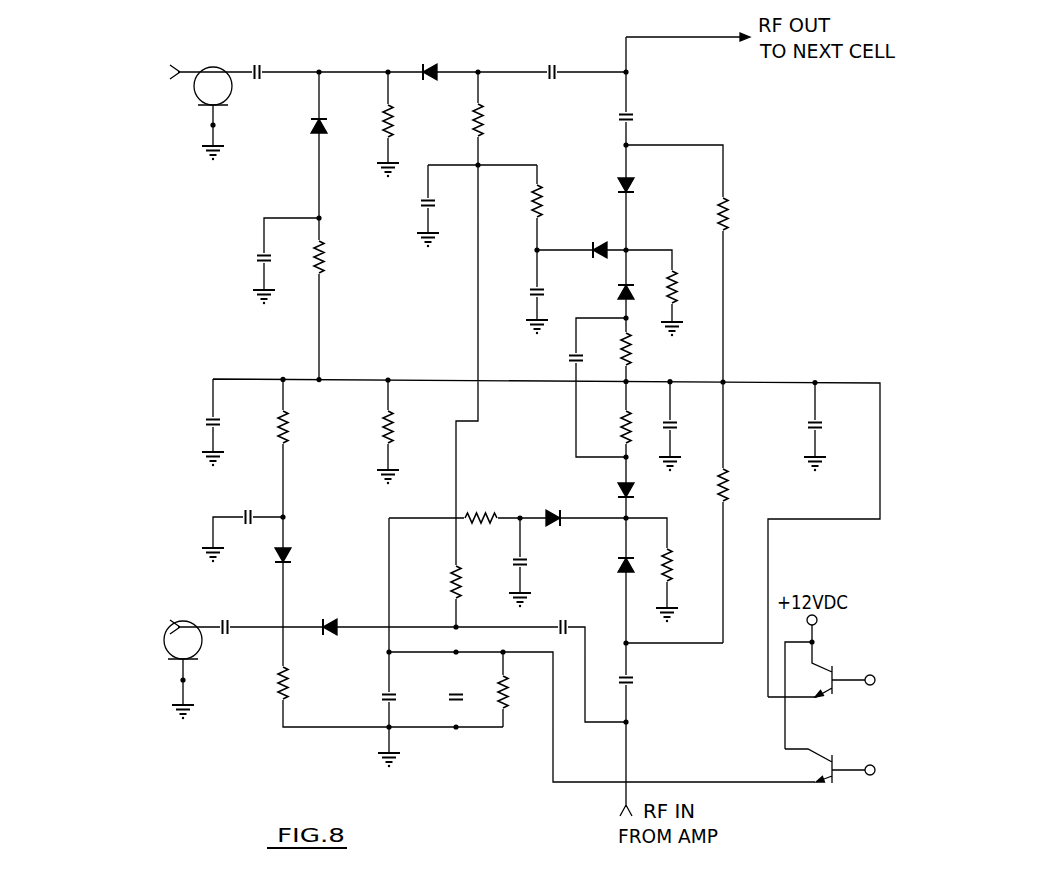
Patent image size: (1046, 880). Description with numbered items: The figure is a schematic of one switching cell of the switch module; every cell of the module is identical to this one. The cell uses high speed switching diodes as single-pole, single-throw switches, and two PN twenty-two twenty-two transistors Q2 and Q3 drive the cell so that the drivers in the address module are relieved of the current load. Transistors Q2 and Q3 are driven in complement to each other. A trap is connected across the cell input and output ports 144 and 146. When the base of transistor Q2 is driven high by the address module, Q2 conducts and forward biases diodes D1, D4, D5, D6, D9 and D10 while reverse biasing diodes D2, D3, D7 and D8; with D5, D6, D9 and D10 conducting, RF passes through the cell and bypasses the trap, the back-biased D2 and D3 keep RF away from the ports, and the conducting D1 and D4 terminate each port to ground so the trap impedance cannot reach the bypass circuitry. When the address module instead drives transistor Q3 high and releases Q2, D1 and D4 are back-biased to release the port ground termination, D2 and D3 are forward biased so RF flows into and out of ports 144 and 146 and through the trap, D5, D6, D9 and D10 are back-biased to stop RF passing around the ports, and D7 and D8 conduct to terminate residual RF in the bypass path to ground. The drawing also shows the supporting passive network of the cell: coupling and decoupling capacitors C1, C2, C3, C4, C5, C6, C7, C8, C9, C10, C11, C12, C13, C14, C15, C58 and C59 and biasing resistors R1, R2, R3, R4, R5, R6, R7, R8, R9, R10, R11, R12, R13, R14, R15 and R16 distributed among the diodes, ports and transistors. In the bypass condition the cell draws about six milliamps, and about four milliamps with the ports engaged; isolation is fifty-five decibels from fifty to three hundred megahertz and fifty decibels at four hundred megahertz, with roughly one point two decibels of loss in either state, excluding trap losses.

The cell input port 144 is at (186, 124).
The cell output port 146 is at (155, 678).
The capacitor C1 is at (257, 58).
The capacitor C2 is at (252, 259).
The capacitor C3 is at (202, 421).
The capacitor C4 is at (251, 504).
The capacitor C5 is at (415, 201).
The capacitor C6 is at (525, 293).
The capacitor C7 is at (469, 699).
The capacitor C8 is at (506, 561).
The capacitor C9 is at (227, 614).
The capacitor C10 is at (558, 357).
The capacitor C11 is at (642, 117).
The capacitor C12 is at (552, 58).
The capacitor C13 is at (643, 681).
The capacitor C14 is at (563, 616).
The capacitor C15 is at (687, 423).
The capacitor C58 is at (408, 699).
The capacitor C59 is at (836, 425).
The resistor R1 is at (401, 121).
The resistor R2 is at (307, 257).
The resistor R3 10K R3 is at (407, 425).
The resistor R4 is at (270, 427).
The resistor R5 is at (491, 120).
The resistor R6 is at (549, 201).
The resistor R7 10K R7 is at (522, 692).
The resistor R8 is at (481, 505).
The resistor R9 is at (443, 581).
The resistor R10 is at (302, 683).
The resistor R11 is at (611, 349).
The resistor R12 is at (609, 426).
The resistor R13 is at (690, 287).
The resistor R14 is at (685, 565).
The resistor R15 is at (742, 213).
The resistor R16 is at (741, 485).
The diode D1 is at (305, 128).
The diode D2 is at (430, 57).
The diode D3 is at (335, 614).
The diode D4 is at (298, 550).
The diode D5 is at (612, 290).
The diode D6 is at (640, 491).
The diode D7 is at (599, 236).
The diode D8 is at (548, 505).
The diode D9 is at (641, 181).
The diode D10 is at (606, 565).
The transistor Q2 is at (833, 757).
The transistor Q3 is at (818, 667).